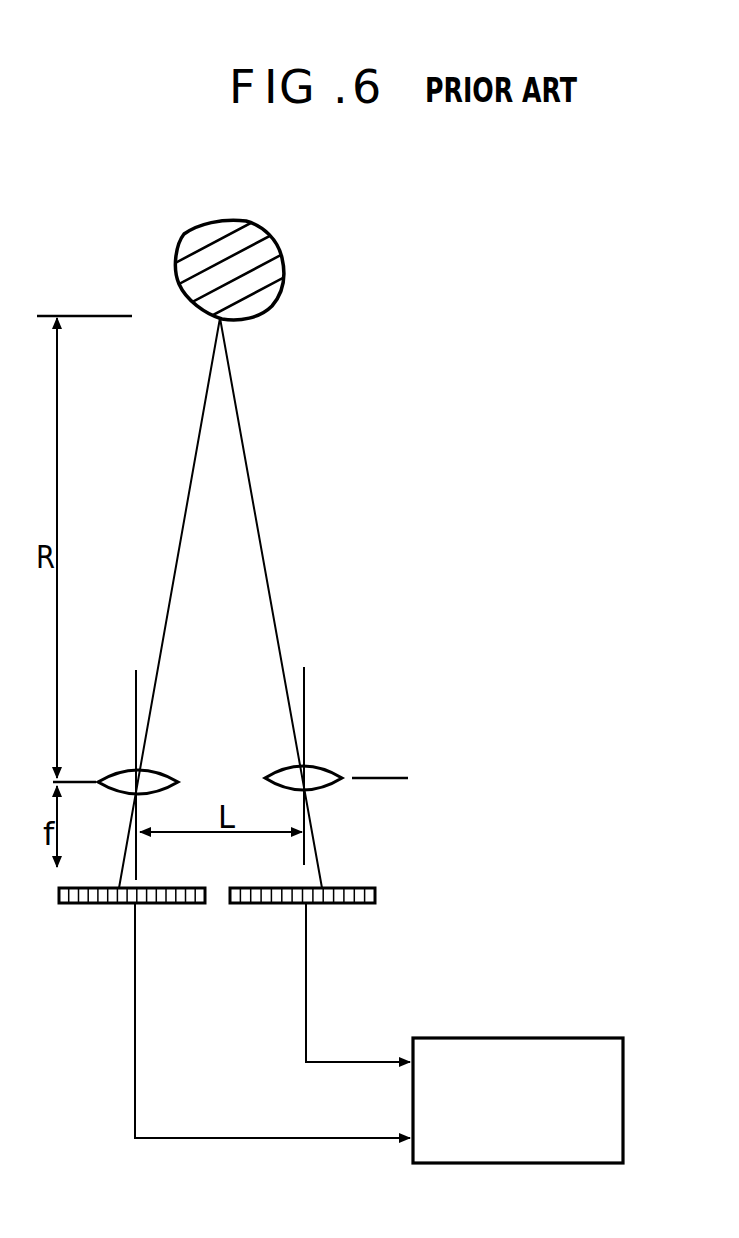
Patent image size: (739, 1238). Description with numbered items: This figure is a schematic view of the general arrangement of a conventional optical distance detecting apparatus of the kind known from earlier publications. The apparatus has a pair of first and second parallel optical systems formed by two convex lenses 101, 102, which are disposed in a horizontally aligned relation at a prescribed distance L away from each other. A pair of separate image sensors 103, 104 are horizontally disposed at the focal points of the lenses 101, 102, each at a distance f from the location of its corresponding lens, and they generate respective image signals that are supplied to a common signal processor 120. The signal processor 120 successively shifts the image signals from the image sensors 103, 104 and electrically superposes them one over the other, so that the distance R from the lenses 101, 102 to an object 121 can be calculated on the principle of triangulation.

The object 121 is at (283, 282).
The convex lens 101 is at (162, 769).
The convex lens 102 is at (330, 766).
The image sensor 103 is at (86, 905).
The image sensor 104 is at (366, 905).
The signal processor 120 is at (566, 1038).